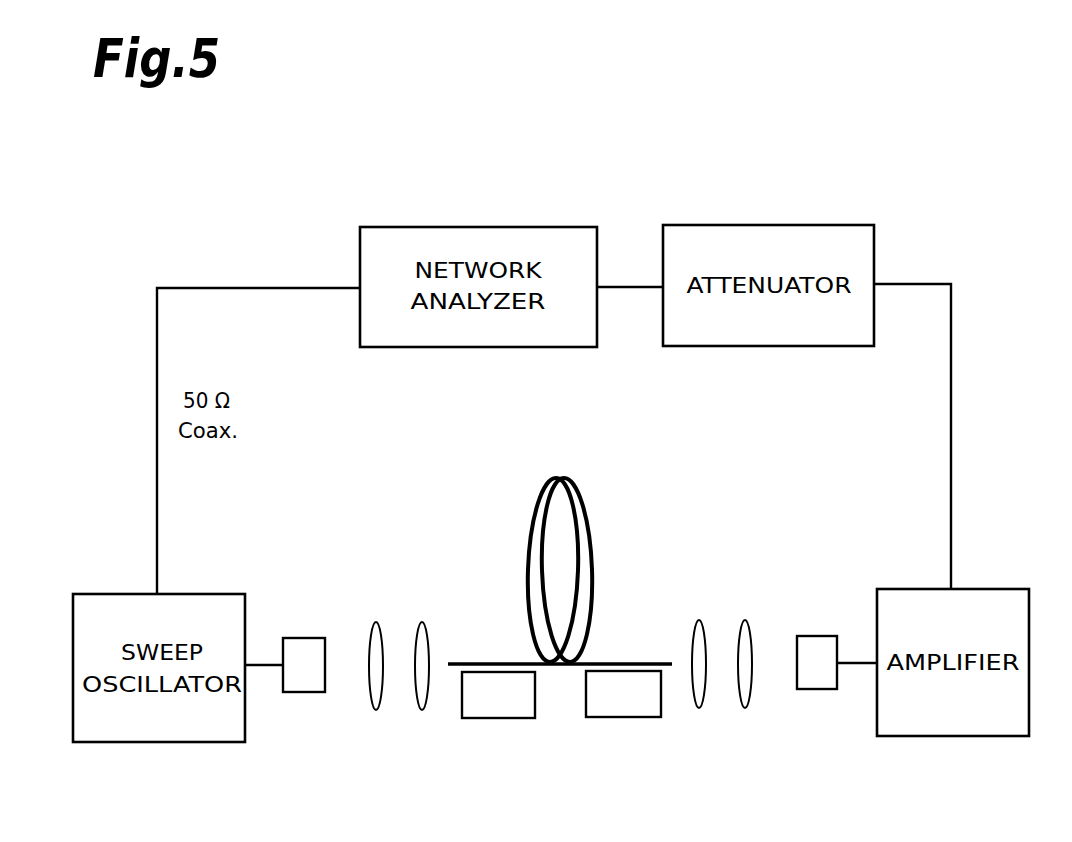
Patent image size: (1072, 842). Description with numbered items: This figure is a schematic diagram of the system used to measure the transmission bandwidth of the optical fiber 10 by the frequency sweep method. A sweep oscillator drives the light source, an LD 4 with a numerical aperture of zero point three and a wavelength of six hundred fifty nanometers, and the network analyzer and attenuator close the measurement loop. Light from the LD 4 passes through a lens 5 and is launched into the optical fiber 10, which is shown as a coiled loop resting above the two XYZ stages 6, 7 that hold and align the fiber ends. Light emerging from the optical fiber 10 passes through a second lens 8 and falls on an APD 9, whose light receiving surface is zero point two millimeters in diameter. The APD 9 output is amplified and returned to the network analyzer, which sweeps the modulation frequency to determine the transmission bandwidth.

The LD 4 is at (305, 692).
The lens 5 is at (422, 710).
The XYZ stage 6 is at (498, 718).
The XYZ stage 7 is at (625, 717).
The lens 8 is at (699, 708).
The APD 9 is at (822, 689).
The optical fiber 10 is at (592, 520).